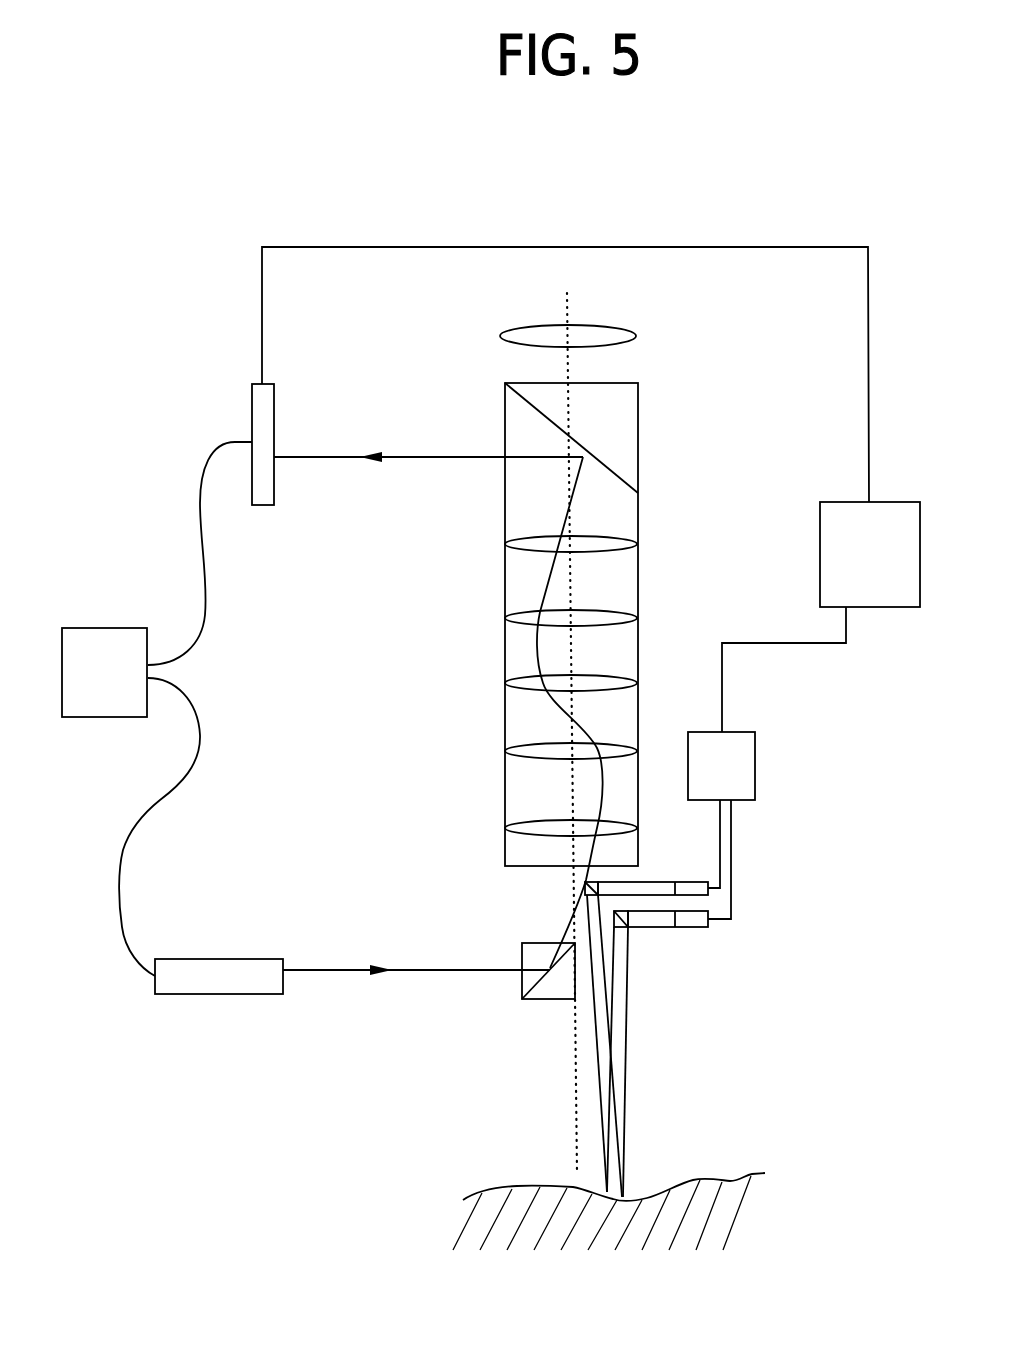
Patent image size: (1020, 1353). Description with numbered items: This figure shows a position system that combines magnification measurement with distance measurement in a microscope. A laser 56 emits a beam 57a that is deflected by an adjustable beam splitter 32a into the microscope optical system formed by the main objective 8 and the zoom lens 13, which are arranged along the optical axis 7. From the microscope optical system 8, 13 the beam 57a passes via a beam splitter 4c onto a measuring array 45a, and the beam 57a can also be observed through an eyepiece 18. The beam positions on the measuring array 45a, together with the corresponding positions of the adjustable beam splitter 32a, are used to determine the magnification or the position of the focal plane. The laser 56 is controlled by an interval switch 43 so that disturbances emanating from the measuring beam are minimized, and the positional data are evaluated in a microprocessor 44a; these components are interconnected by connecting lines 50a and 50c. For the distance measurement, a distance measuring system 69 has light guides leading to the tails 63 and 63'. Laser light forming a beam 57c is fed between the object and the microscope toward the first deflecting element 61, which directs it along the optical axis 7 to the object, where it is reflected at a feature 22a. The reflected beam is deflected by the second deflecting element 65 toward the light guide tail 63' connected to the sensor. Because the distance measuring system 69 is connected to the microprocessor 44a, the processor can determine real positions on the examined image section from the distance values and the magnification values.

The connecting line 50a is at (770, 247).
The measuring array 45a is at (252, 400).
The eyepiece 18 is at (622, 342).
The beam splitter 4c is at (600, 483).
The zoom lens 13 is at (630, 752).
The main objective 8 is at (535, 822).
The beam 57a is at (535, 652).
The microprocessor 44a is at (820, 555).
The distance measuring system 69 is at (755, 768).
The first deflecting element 61 is at (585, 888).
The light guide tail 63 is at (653, 851).
The light guide tail 63' is at (692, 946).
The second deflecting element 65 is at (630, 928).
The light bundle 57c is at (626, 1056).
The adjustable beam splitter 32a is at (540, 999).
The laser 56 is at (200, 994).
The interval switch 43 is at (95, 717).
The connecting line 50c is at (145, 823).
The optical axis 7 is at (576, 1093).
The feature on the object 22a is at (622, 1180).